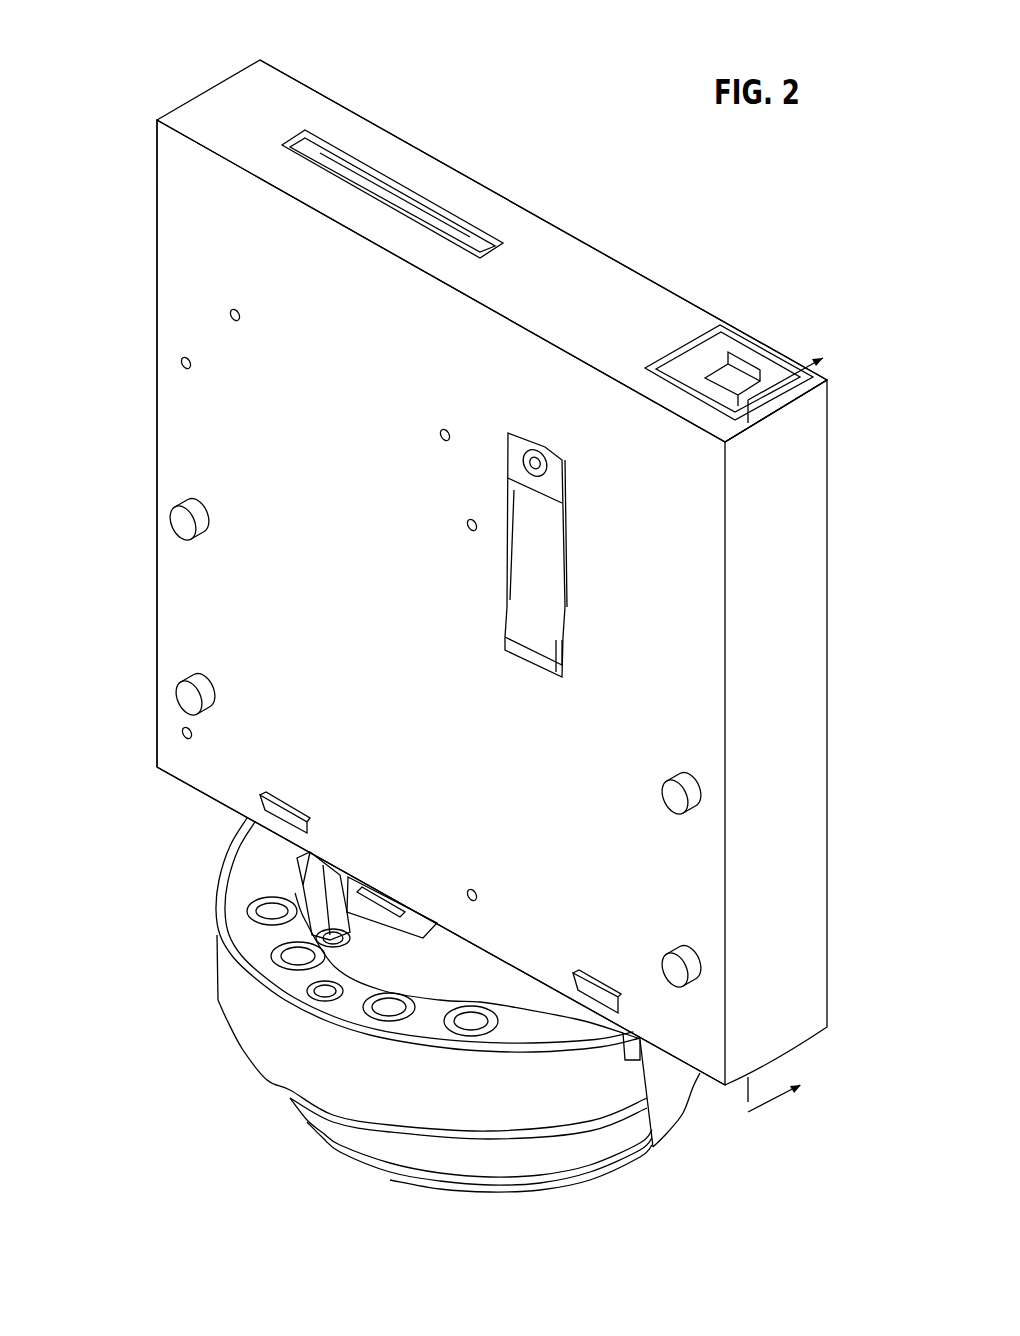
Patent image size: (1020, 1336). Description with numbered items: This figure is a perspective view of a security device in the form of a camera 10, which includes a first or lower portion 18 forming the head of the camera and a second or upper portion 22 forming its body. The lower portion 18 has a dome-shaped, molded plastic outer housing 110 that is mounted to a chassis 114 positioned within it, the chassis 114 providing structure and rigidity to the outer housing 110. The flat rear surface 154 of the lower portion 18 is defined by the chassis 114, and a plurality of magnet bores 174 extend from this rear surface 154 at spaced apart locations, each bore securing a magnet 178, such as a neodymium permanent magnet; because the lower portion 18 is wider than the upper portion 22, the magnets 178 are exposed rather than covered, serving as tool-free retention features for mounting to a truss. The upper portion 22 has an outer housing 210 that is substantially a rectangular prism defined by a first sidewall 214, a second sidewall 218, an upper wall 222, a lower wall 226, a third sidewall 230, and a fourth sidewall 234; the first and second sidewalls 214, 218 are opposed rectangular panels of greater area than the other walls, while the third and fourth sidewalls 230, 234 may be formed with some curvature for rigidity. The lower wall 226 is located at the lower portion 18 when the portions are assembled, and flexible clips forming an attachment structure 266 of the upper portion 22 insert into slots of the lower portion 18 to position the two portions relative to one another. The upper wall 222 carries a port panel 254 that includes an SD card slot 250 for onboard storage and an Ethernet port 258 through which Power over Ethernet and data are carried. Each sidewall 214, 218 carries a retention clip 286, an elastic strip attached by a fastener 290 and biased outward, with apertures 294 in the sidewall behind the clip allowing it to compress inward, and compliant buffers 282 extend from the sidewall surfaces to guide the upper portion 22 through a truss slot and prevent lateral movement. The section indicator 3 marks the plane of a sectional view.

The camera 10 is at (463, 72).
The lower portion 18 is at (183, 1107).
The upper portion 22 is at (120, 428).
The outer housing 110 is at (335, 1082).
The chassis 114 is at (243, 864).
The rear surface 154 is at (532, 1023).
The magnet bores 174 is at (270, 920).
The magnet 178 is at (290, 952).
The outer housing 210 is at (165, 266).
The first sidewall 214 is at (198, 627).
The second sidewall 218 is at (700, 305).
The upper wall 222 is at (562, 258).
The lower wall 226 is at (710, 1088).
The third sidewall 230 is at (772, 613).
The fourth sidewall 234 is at (153, 165).
The SD card slot 250 is at (448, 213).
The port panel 254 is at (598, 300).
The Ethernet port 258 is at (755, 366).
The attachment structure 266 is at (645, 1135).
The compliant buffers 282 is at (197, 510).
The retention clip 286 is at (540, 637).
The fastener 290 is at (550, 455).
The apertures 294 is at (507, 508).
The section line 3- 3 is at (792, 724).